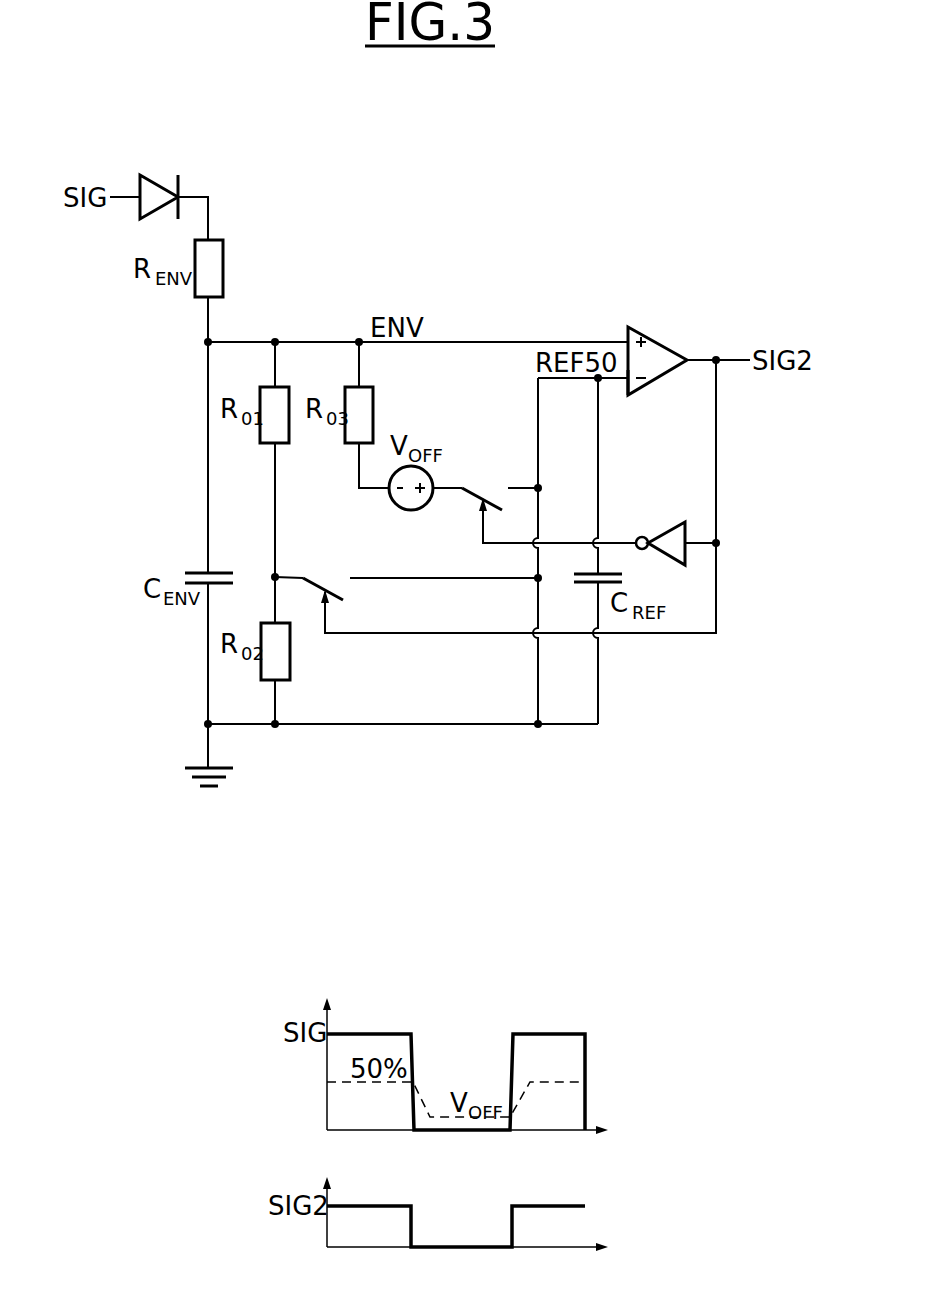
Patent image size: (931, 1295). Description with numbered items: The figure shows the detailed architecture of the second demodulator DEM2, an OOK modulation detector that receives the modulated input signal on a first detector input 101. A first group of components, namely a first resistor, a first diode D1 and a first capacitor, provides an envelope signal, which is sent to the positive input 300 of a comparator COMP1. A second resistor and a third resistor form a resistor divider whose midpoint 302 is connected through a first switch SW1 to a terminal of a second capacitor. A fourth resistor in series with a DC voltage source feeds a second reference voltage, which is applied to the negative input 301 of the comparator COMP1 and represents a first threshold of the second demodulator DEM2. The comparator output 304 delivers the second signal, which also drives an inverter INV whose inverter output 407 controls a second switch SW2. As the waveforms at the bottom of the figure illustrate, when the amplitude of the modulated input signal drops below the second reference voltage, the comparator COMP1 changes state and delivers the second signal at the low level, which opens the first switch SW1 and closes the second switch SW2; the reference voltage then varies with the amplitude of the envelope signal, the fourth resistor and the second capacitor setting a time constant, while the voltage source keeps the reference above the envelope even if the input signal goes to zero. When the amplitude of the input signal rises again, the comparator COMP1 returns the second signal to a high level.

The first detector input 101 is at (139, 190).
The positive input of comparator 300 is at (626, 338).
The negative input of comparator 301 is at (626, 388).
The comparator output 304 is at (688, 366).
The midpoint of the resistor divider 302 is at (272, 575).
The inverter output 407 is at (632, 537).
The first diode D1 is at (163, 186).
The second demodulator DEM2 is at (154, 150).
The first switch SW1 is at (331, 573).
The second switch SW2 is at (493, 483).
The comparator COMP1 is at (697, 312).
The inverter INV is at (665, 528).